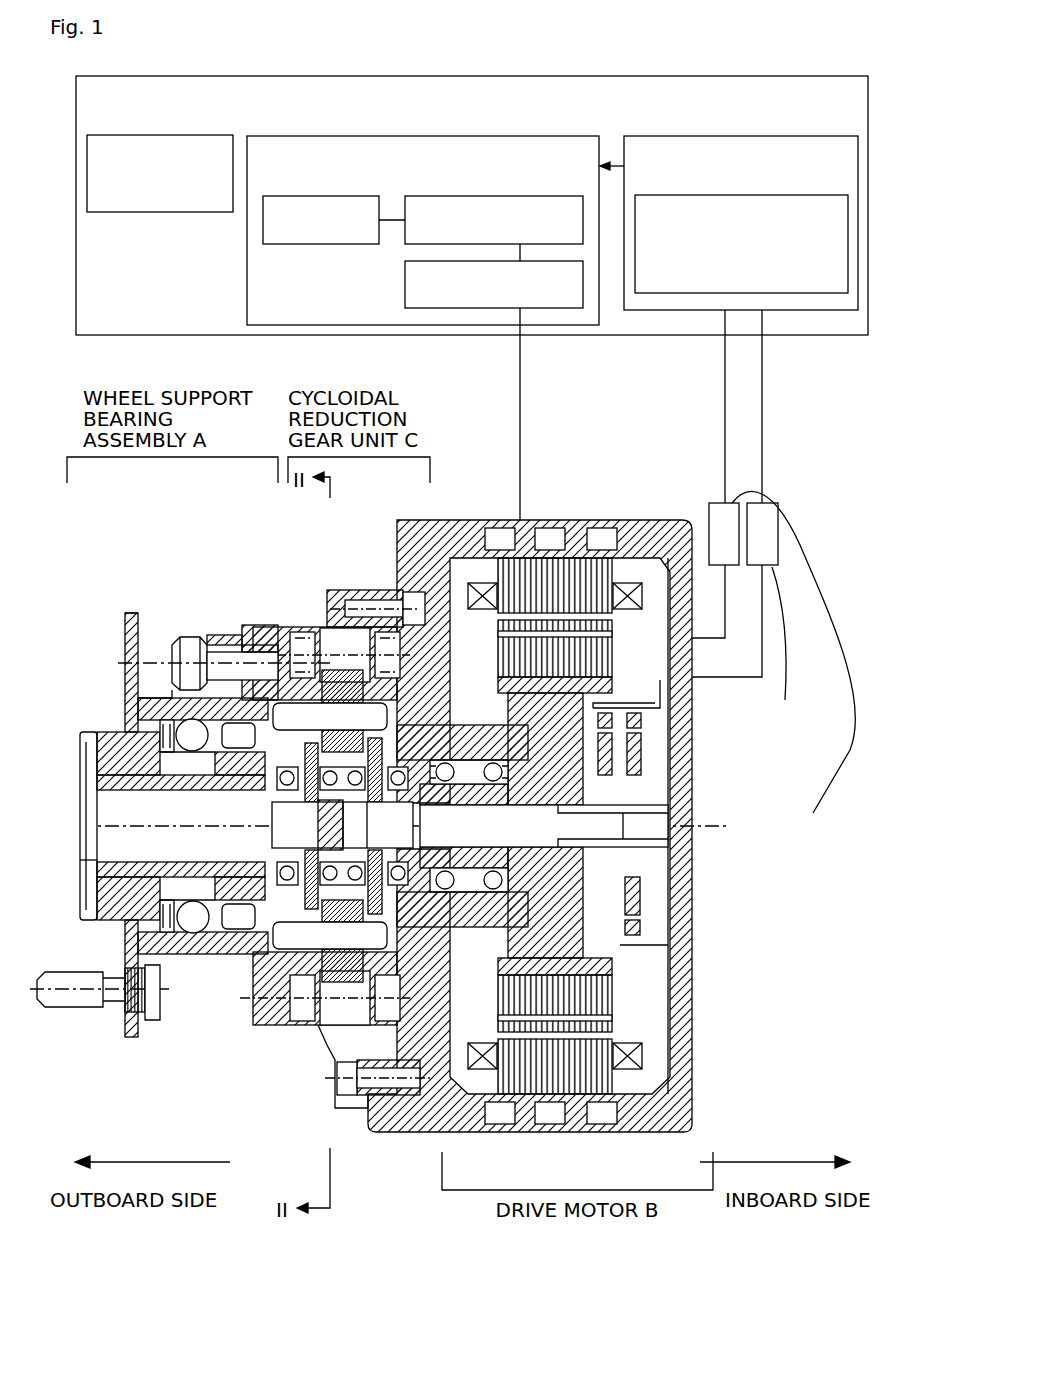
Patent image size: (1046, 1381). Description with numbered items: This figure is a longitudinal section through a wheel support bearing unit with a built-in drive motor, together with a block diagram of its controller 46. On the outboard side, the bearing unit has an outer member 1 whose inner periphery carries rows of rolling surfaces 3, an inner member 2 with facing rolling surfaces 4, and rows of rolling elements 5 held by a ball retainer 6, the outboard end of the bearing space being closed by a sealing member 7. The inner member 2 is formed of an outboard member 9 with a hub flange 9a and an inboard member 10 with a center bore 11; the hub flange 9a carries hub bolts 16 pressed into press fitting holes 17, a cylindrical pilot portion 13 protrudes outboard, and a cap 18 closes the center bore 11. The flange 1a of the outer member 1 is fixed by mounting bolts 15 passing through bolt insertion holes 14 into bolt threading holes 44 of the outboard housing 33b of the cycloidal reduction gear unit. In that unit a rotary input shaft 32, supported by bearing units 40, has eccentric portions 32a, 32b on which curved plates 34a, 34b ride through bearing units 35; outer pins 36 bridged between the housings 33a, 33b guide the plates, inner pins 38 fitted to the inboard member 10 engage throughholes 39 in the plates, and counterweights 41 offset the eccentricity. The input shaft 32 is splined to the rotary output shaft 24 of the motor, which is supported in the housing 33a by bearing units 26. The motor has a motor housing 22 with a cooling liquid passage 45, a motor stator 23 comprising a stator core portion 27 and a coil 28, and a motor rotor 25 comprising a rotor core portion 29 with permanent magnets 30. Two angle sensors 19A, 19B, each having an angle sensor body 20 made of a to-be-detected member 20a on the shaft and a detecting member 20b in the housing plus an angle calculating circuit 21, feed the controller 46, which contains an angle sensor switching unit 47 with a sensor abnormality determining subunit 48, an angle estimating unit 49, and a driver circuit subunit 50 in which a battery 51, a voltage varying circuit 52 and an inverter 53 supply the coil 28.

The outer member 1 is at (168, 700).
The flange 1a is at (195, 638).
The inner member 2 is at (140, 874).
The rolling surfaces 3 is at (192, 930).
The rolling surfaces 4 is at (205, 905).
The rolling elements 5 is at (188, 747).
The ball retainer 6 is at (147, 937).
The sealing member 7 is at (147, 908).
The outboard member 9 is at (130, 745).
The hub flange 9a is at (128, 612).
The inboard member 10 is at (170, 781).
The center bore 11 is at (78, 827).
The pilot portion 13 is at (80, 733).
The bolt insertion holes 14 is at (180, 692).
The mounting bolts 15 is at (185, 637).
The hub bolts 16 is at (103, 998).
The press fitting holes 17 is at (130, 1005).
The cap 18 is at (78, 860).
The angle sensor 19A is at (793, 700).
The angle sensor 19B is at (823, 828).
The angle sensor body 20 is at (704, 812).
The to-be-detected member 20a is at (642, 755).
The detecting member 20b is at (642, 728).
The angle calculating circuit 21 is at (793, 665).
The motor housing 22 is at (610, 522).
The motor stator 23 is at (586, 750).
The rotary output shaft 24 is at (686, 900).
The motor rotor 25 is at (530, 826).
The bearing units 26 is at (497, 890).
The stator core portion 27 is at (614, 570).
The coil 28 is at (640, 590).
The rotor core portion 29 is at (513, 650).
The permanent magnets 30 is at (513, 633).
The rotary input shaft 32 is at (562, 840).
The eccentric portion 32a is at (357, 812).
The eccentric portion 32b is at (333, 848).
The housing 33a is at (433, 640).
The housing 33b is at (312, 668).
The curved plate 34a is at (352, 1005).
The curved plate 34b is at (353, 985).
The bearing units 35 is at (290, 985).
The outer pins 36 is at (352, 640).
The inner pins 38 is at (298, 700).
The throughholes 39 is at (332, 655).
The bearing units 40 is at (233, 935).
The counterweights 41 is at (243, 750).
The bolt threading holes 44 is at (233, 647).
The cooling liquid passage 45 is at (602, 533).
The controller 46 is at (110, 98).
The angle sensor switching unit 47 is at (762, 135).
The sensor abnormality determining subunit 48 is at (827, 293).
The angle estimating unit 49 is at (87, 160).
The driver circuit subunit 50 is at (247, 278).
The battery 51 is at (337, 195).
The voltage varying circuit 52 is at (567, 195).
The inverter 53 is at (585, 297).